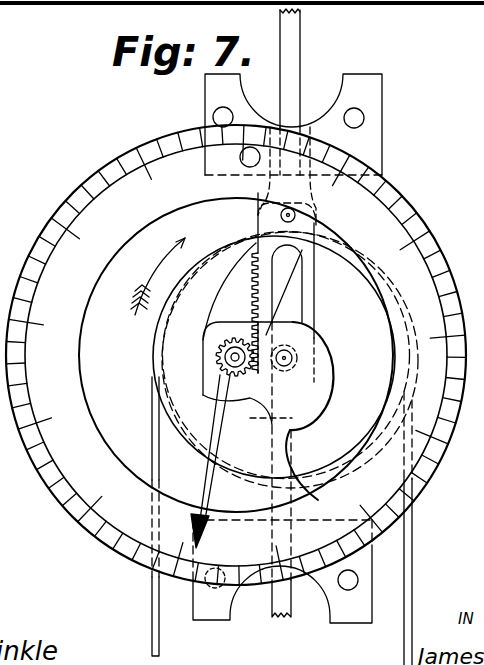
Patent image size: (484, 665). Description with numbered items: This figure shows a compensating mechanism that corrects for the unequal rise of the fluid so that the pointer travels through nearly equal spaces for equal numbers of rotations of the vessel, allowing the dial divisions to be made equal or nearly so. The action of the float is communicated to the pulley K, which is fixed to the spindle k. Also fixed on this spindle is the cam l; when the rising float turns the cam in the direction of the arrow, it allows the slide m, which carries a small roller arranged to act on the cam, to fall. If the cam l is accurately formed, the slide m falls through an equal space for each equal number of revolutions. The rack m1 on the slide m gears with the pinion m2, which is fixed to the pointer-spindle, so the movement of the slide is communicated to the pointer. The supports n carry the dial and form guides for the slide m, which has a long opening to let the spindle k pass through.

The slide m is at (268, 313).
The supports for the dial n is at (287, 348).
The cam l is at (229, 291).
The rack m1 is at (280, 290).
The pinion m2 is at (235, 349).
The spindle k is at (285, 352).
The pulley K is at (205, 461).